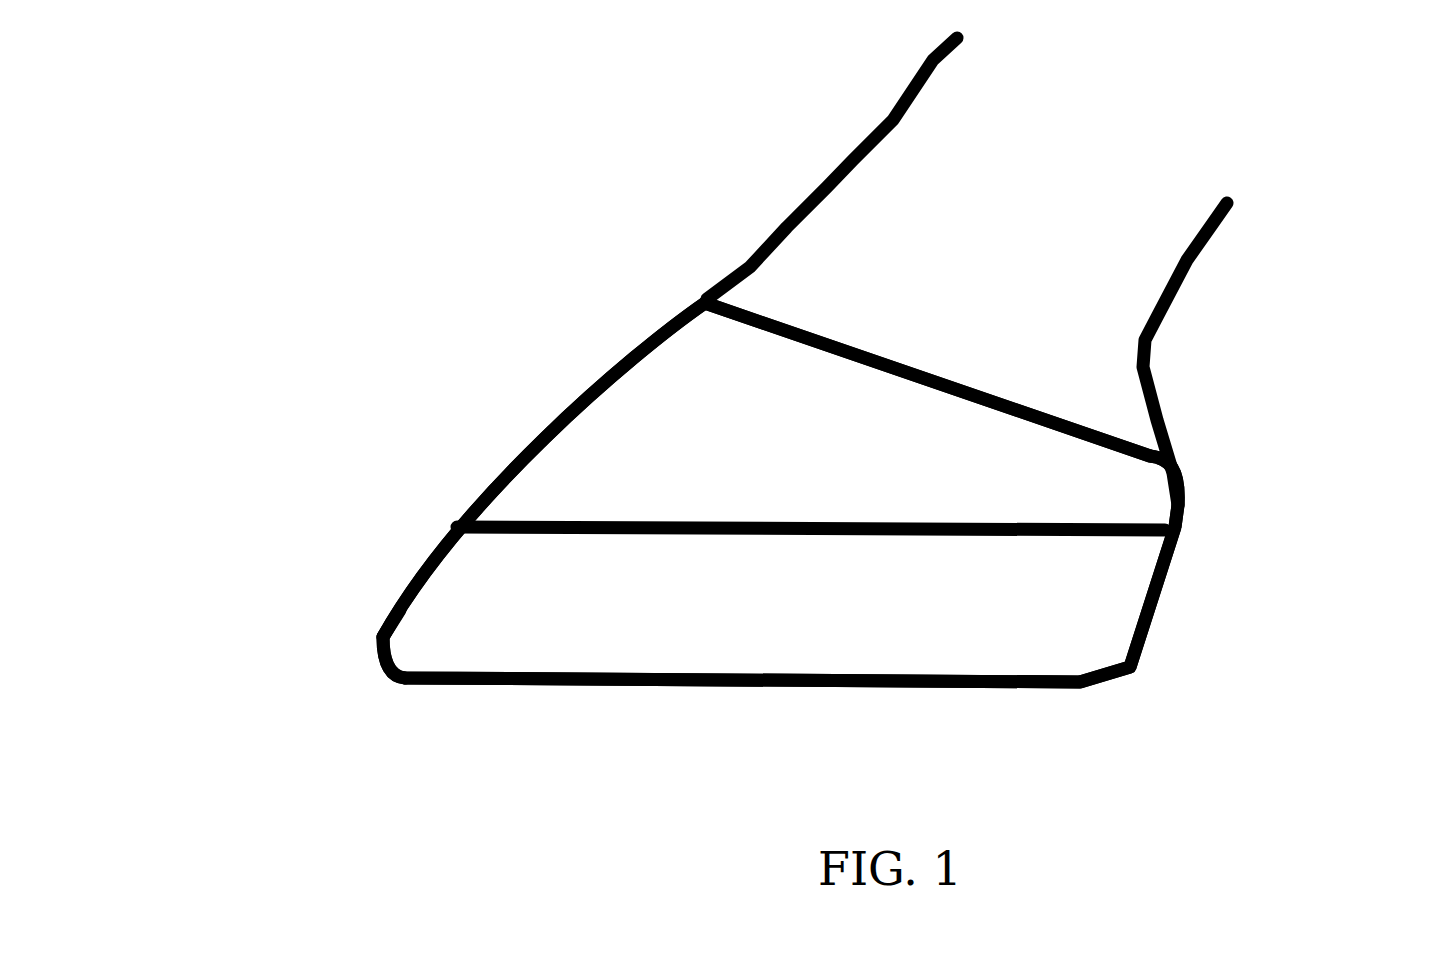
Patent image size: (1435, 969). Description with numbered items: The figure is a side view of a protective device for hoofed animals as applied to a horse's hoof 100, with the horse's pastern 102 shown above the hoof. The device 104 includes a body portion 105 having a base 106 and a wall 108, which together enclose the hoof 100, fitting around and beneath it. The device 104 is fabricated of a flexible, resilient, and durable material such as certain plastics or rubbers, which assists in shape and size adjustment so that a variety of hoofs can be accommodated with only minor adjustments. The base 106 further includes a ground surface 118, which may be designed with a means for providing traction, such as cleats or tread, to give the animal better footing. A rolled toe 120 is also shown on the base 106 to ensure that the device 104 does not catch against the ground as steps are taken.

The hoof 100 is at (703, 297).
The pastern 102 is at (1140, 425).
The device 104 is at (382, 288).
The body portion 105 is at (630, 413).
The base 106 is at (1077, 610).
The wall 108 is at (1183, 500).
The ground surface 118 is at (503, 685).
The rolled toe 120 is at (377, 653).